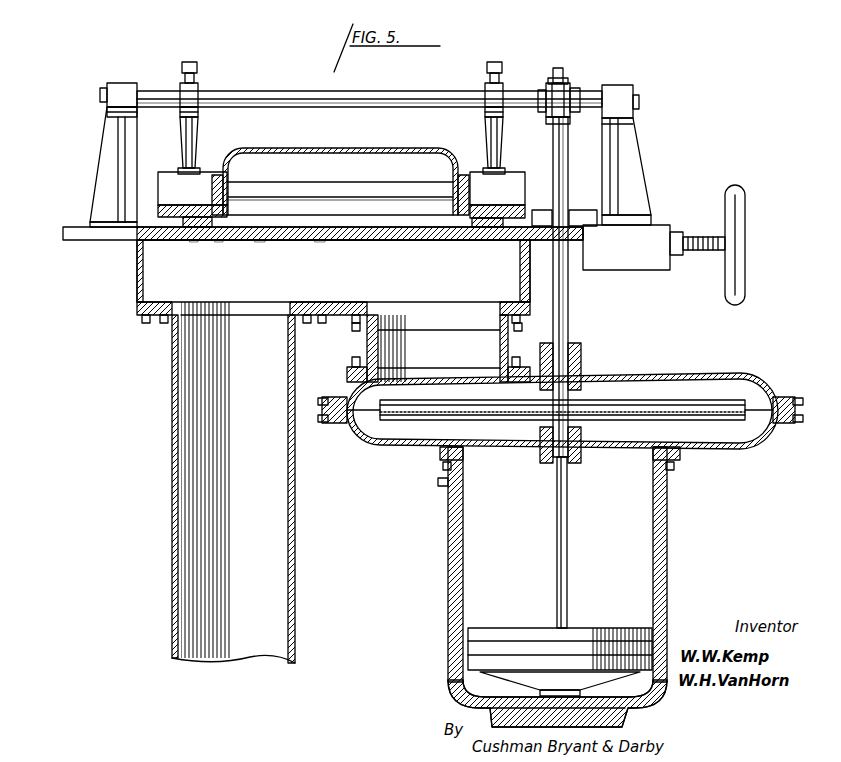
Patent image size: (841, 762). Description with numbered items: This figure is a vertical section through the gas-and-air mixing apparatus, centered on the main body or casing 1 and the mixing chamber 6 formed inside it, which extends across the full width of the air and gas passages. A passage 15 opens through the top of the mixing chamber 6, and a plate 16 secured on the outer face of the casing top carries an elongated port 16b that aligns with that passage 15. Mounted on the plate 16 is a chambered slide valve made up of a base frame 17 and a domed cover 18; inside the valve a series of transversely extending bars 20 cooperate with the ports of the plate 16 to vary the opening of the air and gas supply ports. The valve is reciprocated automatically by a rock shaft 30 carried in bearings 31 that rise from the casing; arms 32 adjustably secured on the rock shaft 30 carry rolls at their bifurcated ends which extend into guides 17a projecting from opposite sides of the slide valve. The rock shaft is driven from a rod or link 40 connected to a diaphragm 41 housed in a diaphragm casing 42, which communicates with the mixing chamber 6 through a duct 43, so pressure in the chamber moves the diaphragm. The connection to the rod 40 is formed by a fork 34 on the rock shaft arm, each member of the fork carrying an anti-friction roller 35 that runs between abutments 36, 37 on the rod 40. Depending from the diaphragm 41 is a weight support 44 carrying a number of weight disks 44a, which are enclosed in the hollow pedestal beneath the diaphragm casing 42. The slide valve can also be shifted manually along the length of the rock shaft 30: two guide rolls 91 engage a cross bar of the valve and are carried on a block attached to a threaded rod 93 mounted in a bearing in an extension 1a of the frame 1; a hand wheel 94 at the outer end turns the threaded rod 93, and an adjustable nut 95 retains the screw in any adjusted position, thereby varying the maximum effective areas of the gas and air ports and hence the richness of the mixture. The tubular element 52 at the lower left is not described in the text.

The main body or casing 1 is at (137, 268).
The extension from the frame 1a is at (647, 262).
The mixing chamber 6 is at (333, 281).
The passage 15 is at (262, 242).
The plate 16 is at (195, 242).
The elongated port 16b is at (322, 242).
The base frame 17 is at (222, 242).
The guides 17a is at (160, 178).
The domed cover 18 is at (343, 150).
The transversely extending bars 20 is at (398, 200).
The rock shaft 30 is at (300, 97).
The bearings 31 is at (110, 153).
The arms 32 is at (197, 145).
The fork 34 is at (541, 92).
The anti-friction roller 35 is at (552, 122).
The abutment 36 is at (572, 120).
The abutment 37 is at (568, 84).
The rod or link 40 is at (569, 297).
The diaphragm 41 is at (640, 405).
The diaphragm casing 42 is at (718, 376).
The duct 43 is at (464, 352).
The weight support 44 is at (568, 555).
The weight disks 44a is at (604, 628).
The tube 52 is at (172, 465).
The guide rolls 91 is at (548, 215).
The threaded rod 93 is at (706, 251).
The hand wheel 94 is at (745, 258).
The adjustable nut 95 is at (676, 230).